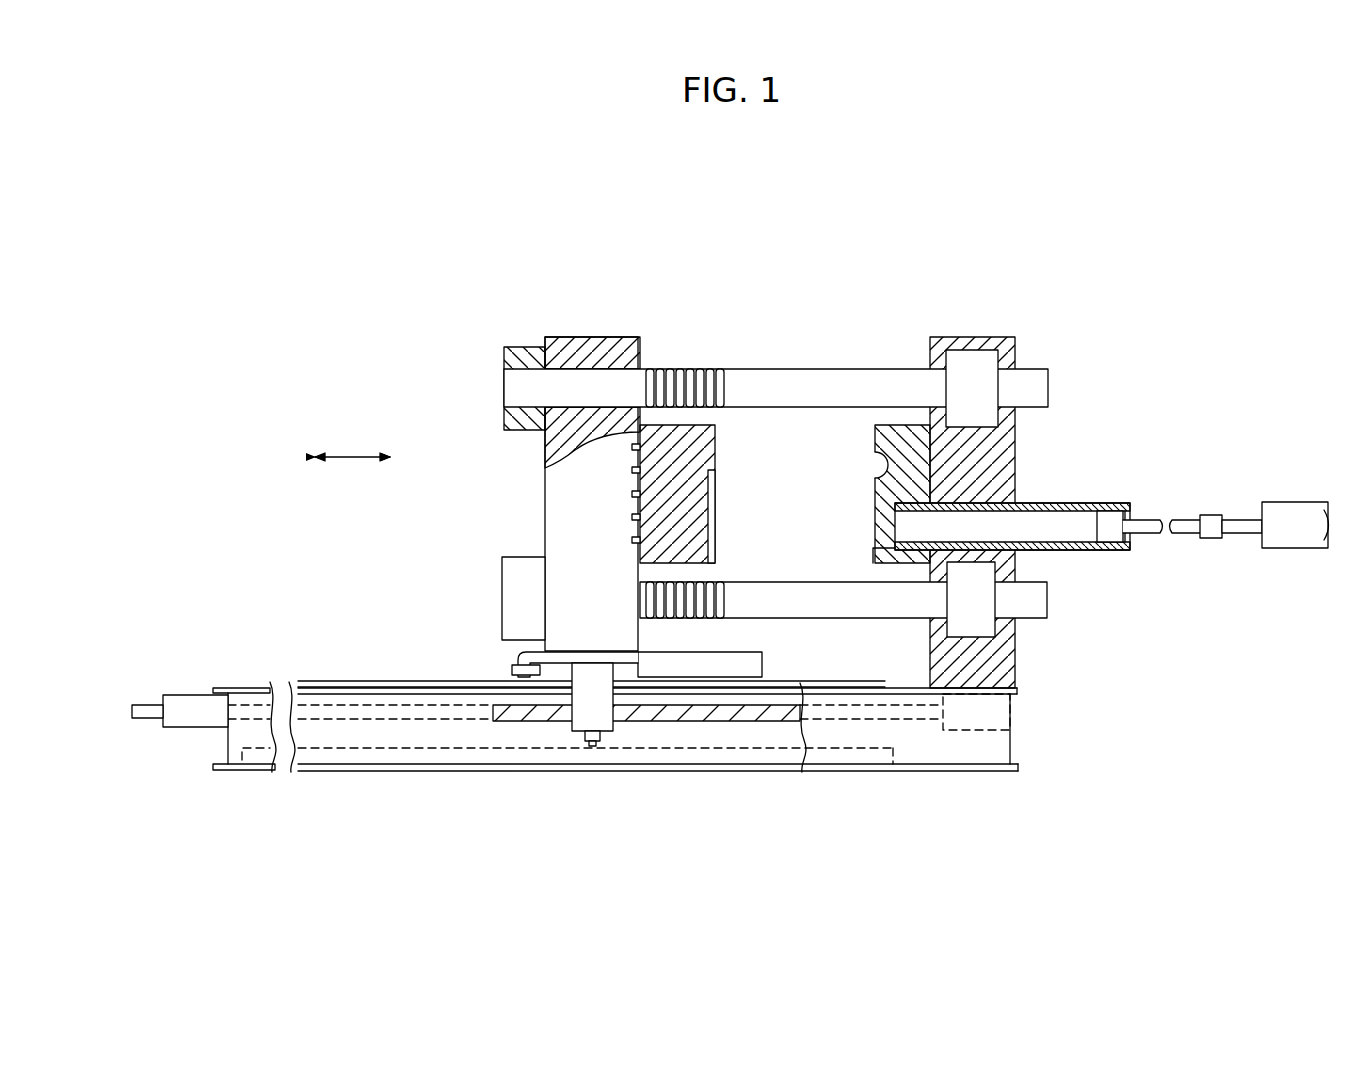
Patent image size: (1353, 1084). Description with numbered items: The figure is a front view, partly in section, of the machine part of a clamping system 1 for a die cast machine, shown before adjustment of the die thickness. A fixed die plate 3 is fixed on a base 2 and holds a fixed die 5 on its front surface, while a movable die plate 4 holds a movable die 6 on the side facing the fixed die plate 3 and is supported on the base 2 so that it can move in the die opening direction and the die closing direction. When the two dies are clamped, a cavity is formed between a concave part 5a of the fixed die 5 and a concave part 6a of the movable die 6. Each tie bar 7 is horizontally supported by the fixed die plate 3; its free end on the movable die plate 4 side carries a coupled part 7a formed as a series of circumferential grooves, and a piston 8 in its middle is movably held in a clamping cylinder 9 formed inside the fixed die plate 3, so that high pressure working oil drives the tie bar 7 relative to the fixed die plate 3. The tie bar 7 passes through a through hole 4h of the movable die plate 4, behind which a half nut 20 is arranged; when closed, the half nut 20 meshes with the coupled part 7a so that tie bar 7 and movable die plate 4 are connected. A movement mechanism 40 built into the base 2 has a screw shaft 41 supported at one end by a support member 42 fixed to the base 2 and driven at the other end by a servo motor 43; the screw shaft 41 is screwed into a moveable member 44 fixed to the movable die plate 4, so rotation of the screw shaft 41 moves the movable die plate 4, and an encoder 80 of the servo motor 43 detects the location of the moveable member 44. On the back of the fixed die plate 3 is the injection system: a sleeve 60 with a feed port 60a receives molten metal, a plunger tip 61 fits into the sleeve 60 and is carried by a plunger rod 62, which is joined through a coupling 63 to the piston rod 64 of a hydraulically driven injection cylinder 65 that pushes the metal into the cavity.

The clamping system 1 is at (716, 558).
The base 2 is at (910, 760).
The fixed die plate 3 is at (1115, 478).
The movable die plate 4 is at (453, 467).
The through hole 4h is at (596, 392).
The fixed die 5 is at (885, 415).
The concave part of the fixed die 5a is at (883, 462).
The movable die 6 is at (680, 401).
The concave part of the movable die 6a is at (717, 460).
The tie bar 7 is at (806, 385).
The coupled part 7a is at (698, 380).
The piston 8 is at (1058, 686).
The clamping cylinder 9 is at (990, 346).
The half nut 20 is at (523, 347).
The movement mechanism 40 is at (616, 794).
The screw shaft 41 is at (583, 708).
The support member 42 is at (995, 717).
The servo motor 43 is at (180, 728).
The moveable member 44 is at (597, 735).
The sleeve 60 is at (1033, 535).
The feed port 60a is at (1093, 503).
The plunger tip 61 is at (1112, 525).
The plunger rod 62 is at (1188, 527).
The coupling 63 is at (1210, 538).
The piston rod 64 is at (1240, 527).
The injection cylinder 65 is at (1300, 540).
The encoder 80 is at (152, 705).